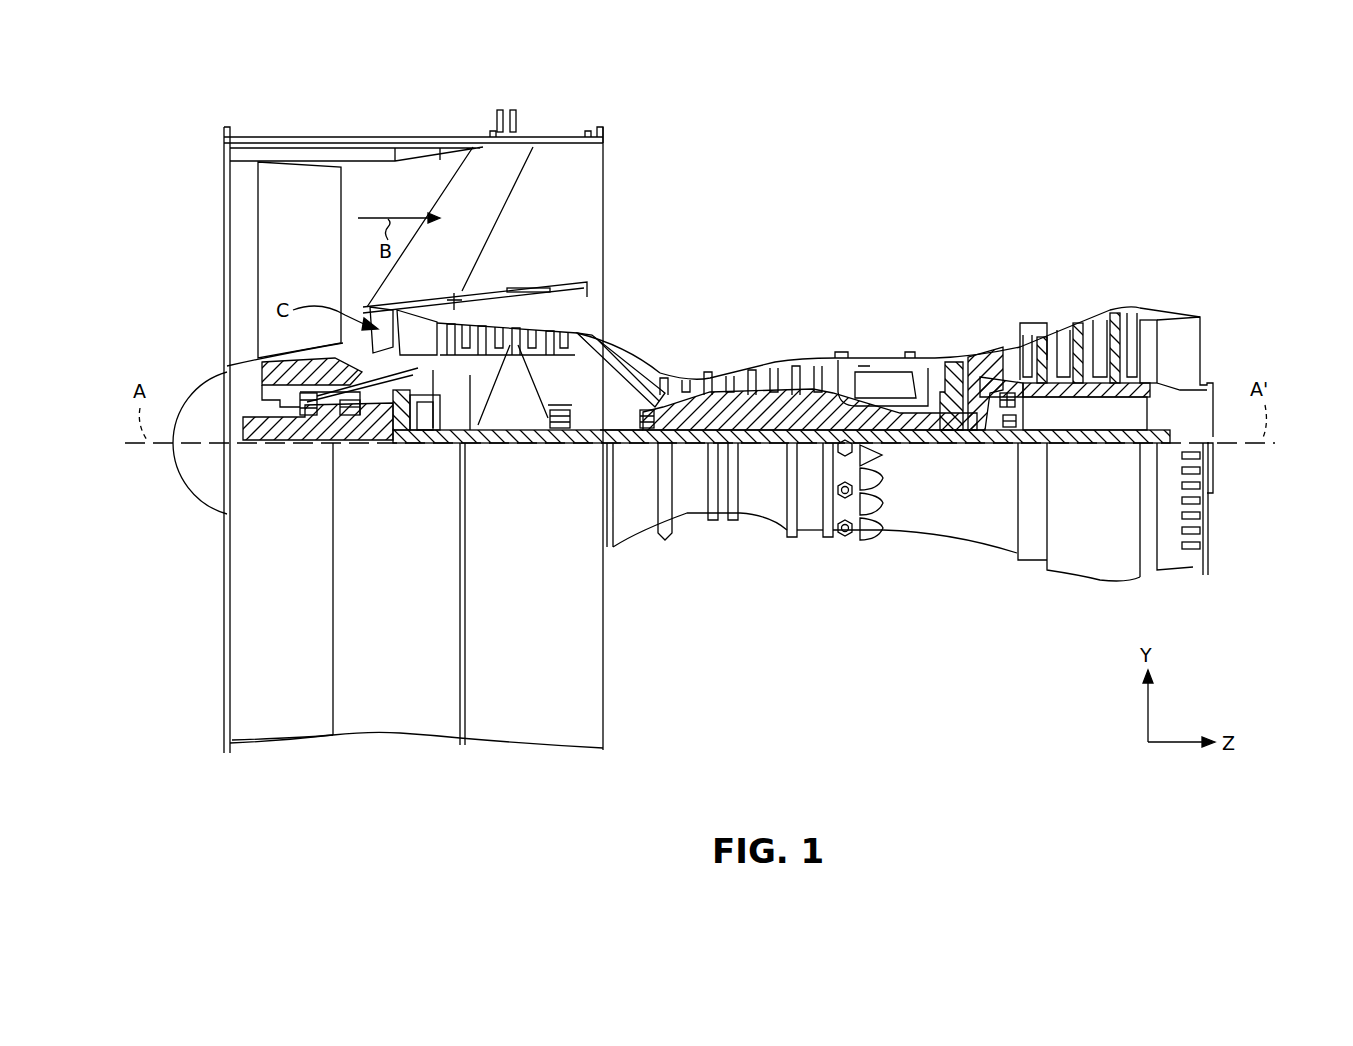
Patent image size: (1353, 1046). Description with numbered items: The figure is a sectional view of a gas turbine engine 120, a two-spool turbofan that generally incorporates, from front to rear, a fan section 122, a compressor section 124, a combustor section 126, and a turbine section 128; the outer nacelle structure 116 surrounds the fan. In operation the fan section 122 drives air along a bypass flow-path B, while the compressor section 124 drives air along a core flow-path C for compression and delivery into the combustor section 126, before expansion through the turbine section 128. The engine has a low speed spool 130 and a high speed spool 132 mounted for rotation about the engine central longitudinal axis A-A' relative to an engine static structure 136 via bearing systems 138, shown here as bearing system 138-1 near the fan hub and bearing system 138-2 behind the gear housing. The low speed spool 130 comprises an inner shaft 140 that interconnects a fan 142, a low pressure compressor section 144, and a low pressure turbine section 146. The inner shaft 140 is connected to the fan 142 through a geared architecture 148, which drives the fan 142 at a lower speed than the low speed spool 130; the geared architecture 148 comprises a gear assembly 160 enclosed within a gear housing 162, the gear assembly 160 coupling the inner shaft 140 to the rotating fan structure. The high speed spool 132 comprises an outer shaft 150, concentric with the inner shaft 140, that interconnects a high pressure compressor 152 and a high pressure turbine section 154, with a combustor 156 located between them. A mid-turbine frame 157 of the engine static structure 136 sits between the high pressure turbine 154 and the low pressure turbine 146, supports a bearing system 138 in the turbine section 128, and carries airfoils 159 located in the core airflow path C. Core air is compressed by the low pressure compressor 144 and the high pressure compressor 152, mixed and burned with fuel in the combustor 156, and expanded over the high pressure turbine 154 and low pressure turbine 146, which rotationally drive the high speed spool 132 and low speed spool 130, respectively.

The fan nacelle / bypass duct 116 is at (393, 720).
The gas turbine engine 120 is at (738, 146).
The fan section 122 is at (458, 120).
The compressor section 124 is at (835, 247).
The combustor section 126 is at (935, 247).
The turbine section 128 is at (1148, 247).
The low speed spool 130 is at (770, 458).
The high speed spool 132 is at (805, 410).
The engine static structure 136 is at (200, 747).
The bearing system 138 is at (990, 437).
The bearing system 138-1 is at (312, 420).
The bearing system 138-2 is at (556, 432).
The inner shaft 140 is at (624, 452).
The fan 142 is at (306, 262).
The low pressure compressor section 144 is at (540, 341).
The low pressure turbine section 146 is at (1080, 325).
The geared architecture 148 is at (430, 462).
The outer shaft 150 is at (878, 434).
The high pressure compressor 152 is at (748, 410).
The high pressure turbine section 154 is at (953, 360).
The combustor 156 is at (878, 392).
The mid-turbine frame 157 is at (992, 380).
The airfoils 159 is at (1002, 382).
The gear assembly 160 is at (420, 445).
The gear housing 162 is at (428, 390).